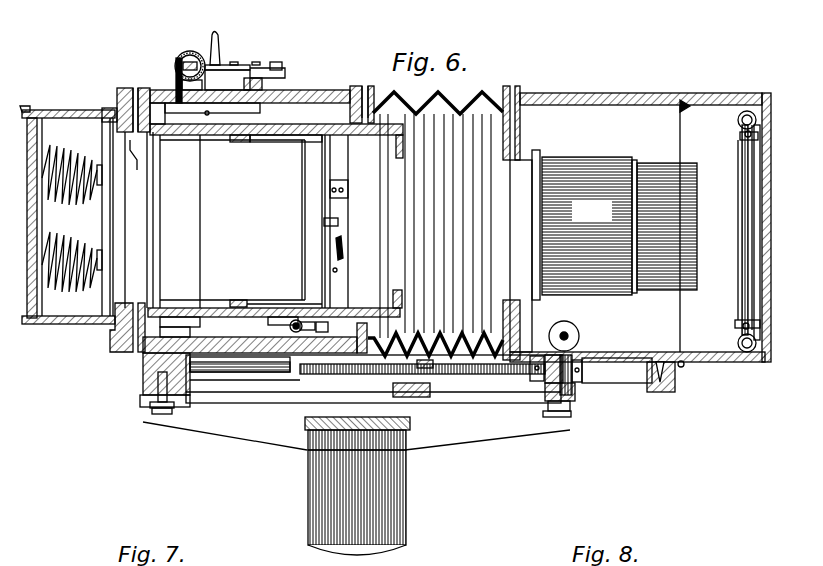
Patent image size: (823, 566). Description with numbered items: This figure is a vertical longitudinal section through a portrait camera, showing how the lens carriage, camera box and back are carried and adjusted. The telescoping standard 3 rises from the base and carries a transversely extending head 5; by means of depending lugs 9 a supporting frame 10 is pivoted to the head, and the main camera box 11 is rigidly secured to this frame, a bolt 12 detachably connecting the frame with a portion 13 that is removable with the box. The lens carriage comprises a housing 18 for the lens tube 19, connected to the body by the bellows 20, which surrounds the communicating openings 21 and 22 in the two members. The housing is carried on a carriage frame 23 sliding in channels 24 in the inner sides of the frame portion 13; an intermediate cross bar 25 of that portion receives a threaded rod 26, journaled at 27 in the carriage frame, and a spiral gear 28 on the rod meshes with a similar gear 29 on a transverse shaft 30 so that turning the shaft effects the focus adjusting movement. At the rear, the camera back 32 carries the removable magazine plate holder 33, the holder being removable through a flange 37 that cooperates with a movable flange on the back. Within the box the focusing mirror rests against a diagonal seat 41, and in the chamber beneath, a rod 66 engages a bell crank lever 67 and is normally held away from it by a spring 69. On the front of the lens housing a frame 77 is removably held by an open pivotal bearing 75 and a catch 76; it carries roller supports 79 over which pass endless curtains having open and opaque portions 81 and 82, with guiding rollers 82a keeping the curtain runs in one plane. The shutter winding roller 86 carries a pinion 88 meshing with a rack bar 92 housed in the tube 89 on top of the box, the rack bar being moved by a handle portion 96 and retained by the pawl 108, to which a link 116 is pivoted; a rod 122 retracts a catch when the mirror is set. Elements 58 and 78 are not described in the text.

The standard 3 is at (395, 522).
The head 5 is at (408, 448).
The depending lugs 9 is at (432, 438).
The supporting frame 10 is at (356, 436).
The camera box 11 is at (305, 95).
The bolt 12 is at (340, 240).
The frame portion 13 is at (145, 360).
The housing 18 is at (580, 97).
The lens tube 19 is at (619, 226).
The bellows 20 is at (458, 100).
The opening 21 is at (540, 152).
The opening 22 is at (398, 165).
The carriage frame 23 is at (672, 390).
The channels 24 is at (218, 370).
The cross bar 25 is at (430, 400).
The rod 26 is at (495, 380).
The journal 27 is at (535, 383).
The spiral gear 28 is at (572, 385).
The spiral gear 29 is at (576, 330).
The shaft 30 is at (564, 332).
The camera back 32 is at (124, 90).
The plate holder 33 is at (80, 110).
The flange 37 is at (112, 330).
The diagonal seat 41 is at (244, 142).
The corner piece 58 is at (110, 108).
The rod 66 is at (290, 328).
The bell crank lever 67 is at (325, 332).
The spring 69 is at (294, 320).
The open pivotal bearing 75 is at (686, 366).
The catch 76 is at (684, 107).
The frame 77 is at (766, 93).
The front cover plate 78 is at (765, 250).
The supports 79 is at (745, 110).
The open portions 81 is at (744, 235).
The opaque portions 82 is at (760, 123).
The guiding rollers 82a is at (740, 136).
The winding roller 86 is at (200, 236).
The pinion 88 is at (176, 82).
The tube 89 is at (190, 51).
The rack bar 92 is at (180, 58).
The handle portion 96 is at (218, 44).
The pawl 108 is at (277, 62).
The link 116 is at (258, 82).
The rod 122 is at (210, 113).